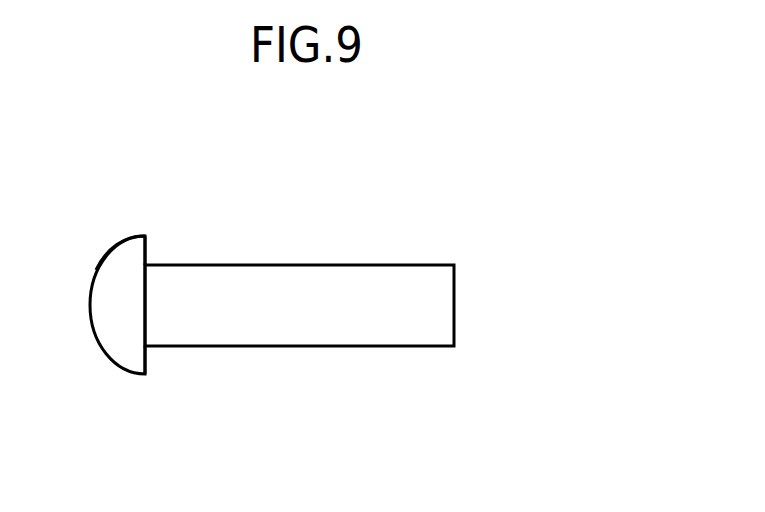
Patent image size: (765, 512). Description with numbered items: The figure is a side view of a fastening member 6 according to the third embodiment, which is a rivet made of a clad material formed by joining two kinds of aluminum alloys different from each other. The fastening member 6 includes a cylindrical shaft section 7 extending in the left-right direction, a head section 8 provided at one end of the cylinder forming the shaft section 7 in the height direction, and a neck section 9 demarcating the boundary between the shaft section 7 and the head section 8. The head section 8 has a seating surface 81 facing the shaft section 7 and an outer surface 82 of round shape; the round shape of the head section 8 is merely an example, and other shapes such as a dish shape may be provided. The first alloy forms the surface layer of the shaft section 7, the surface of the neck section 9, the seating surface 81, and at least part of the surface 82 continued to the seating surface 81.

The fastening member 6 is at (392, 176).
The shaft section 7 is at (365, 330).
The head section 8 is at (106, 306).
The neck section 9 is at (146, 265).
The seating surface 81 is at (147, 374).
The surface of the head section 82 is at (116, 244).